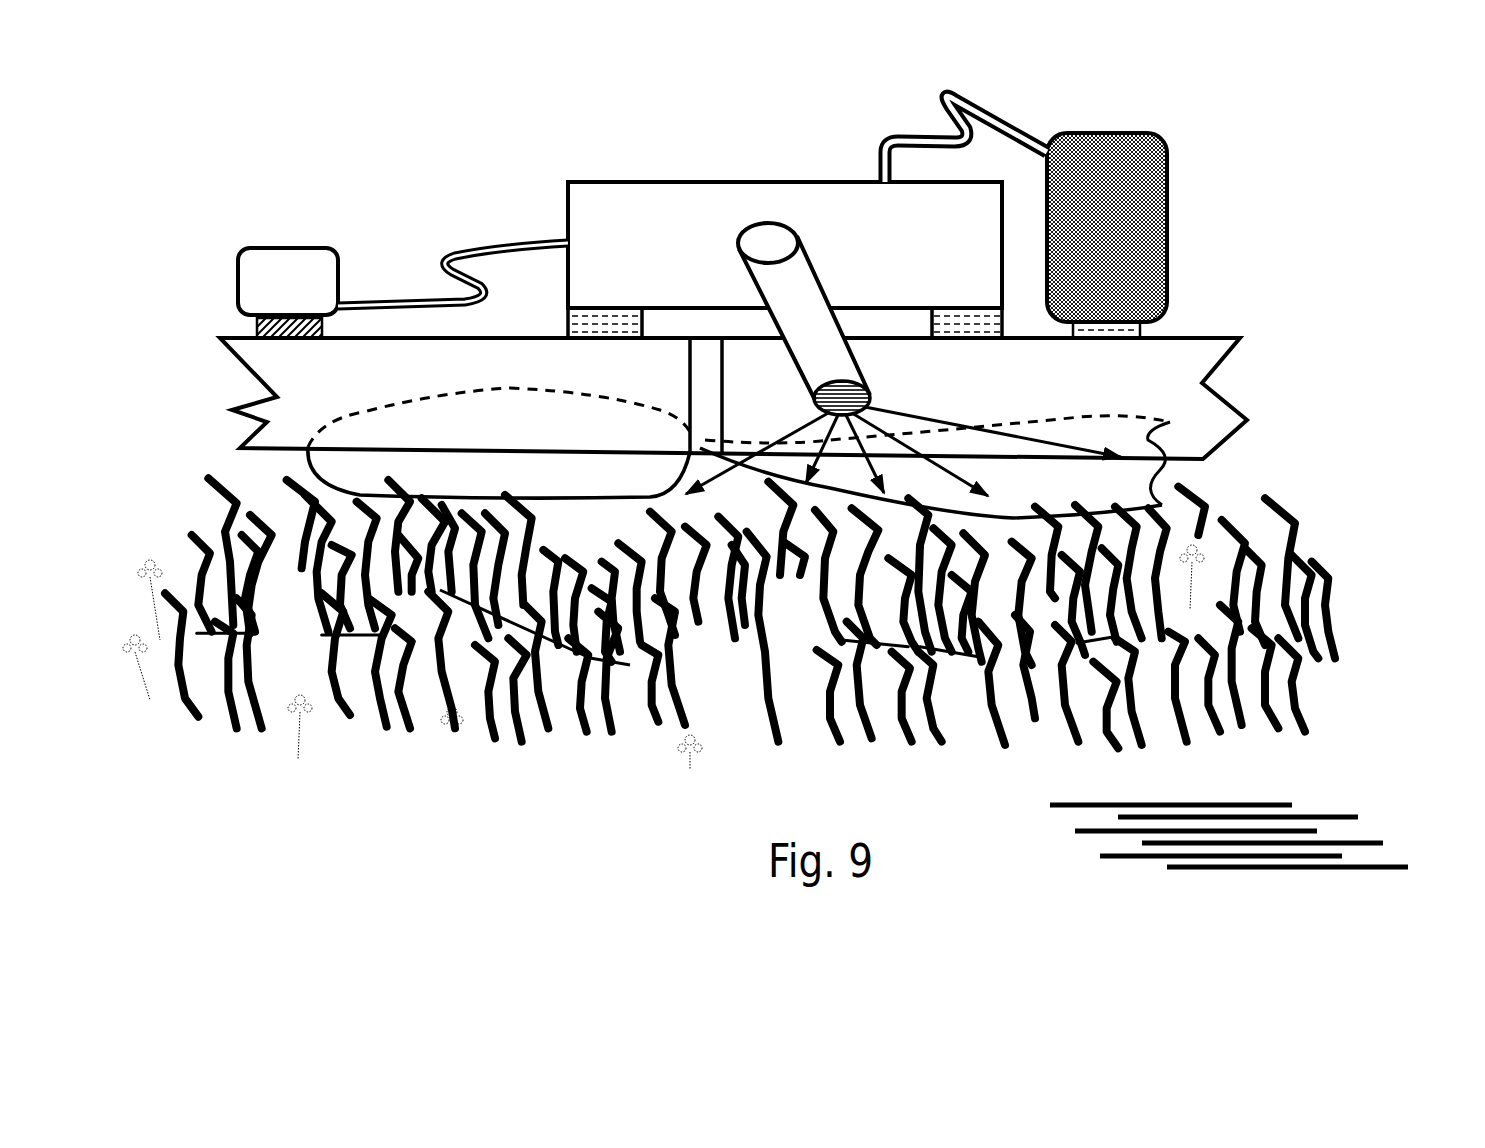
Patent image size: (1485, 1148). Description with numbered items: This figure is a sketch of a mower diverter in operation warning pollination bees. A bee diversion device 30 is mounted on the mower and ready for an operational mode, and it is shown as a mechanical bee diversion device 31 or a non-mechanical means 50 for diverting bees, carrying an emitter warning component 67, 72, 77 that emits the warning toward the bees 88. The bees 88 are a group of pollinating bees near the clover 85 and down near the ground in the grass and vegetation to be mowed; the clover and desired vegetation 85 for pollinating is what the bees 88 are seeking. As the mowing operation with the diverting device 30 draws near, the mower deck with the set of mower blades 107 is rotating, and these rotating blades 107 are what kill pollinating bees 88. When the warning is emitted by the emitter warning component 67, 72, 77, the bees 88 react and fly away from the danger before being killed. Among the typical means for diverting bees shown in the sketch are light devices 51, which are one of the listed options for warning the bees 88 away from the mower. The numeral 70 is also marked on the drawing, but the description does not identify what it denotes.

The bee diversion device 30 is at (833, 277).
The mechanical bee diversion device 31 is at (733, 277).
The non-mechanical means for diverting bees 50 is at (1230, 273).
The emitter warning component 67 is at (645, 293).
The emitter warning component 72 is at (903, 359).
The emitter warning component 77 is at (815, 348).
The set of mower blades 107 is at (1138, 476).
The bees 88 is at (313, 507).
The clover 85 is at (1192, 550).
The light devices for diverting bees 51 is at (1305, 693).
The ground / field direction 70 is at (494, 833).